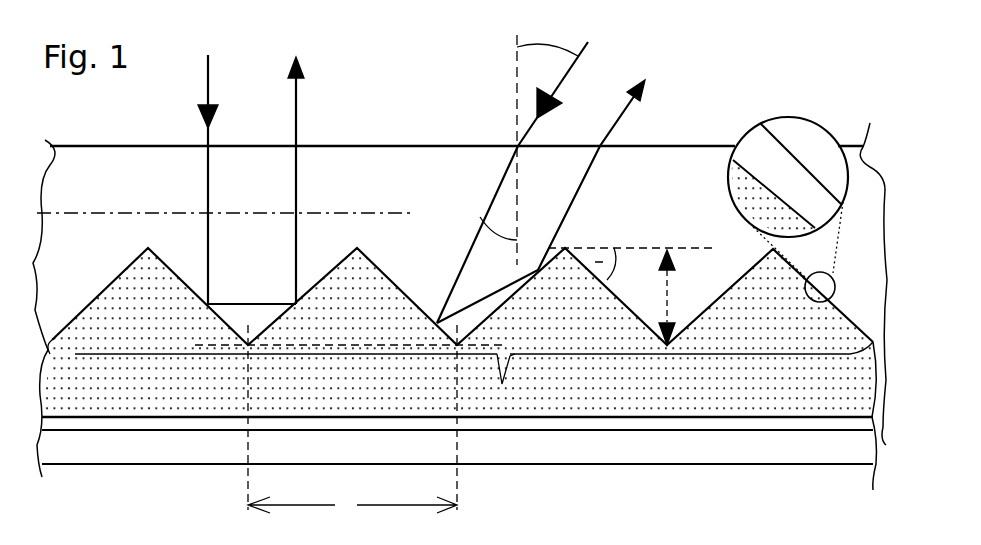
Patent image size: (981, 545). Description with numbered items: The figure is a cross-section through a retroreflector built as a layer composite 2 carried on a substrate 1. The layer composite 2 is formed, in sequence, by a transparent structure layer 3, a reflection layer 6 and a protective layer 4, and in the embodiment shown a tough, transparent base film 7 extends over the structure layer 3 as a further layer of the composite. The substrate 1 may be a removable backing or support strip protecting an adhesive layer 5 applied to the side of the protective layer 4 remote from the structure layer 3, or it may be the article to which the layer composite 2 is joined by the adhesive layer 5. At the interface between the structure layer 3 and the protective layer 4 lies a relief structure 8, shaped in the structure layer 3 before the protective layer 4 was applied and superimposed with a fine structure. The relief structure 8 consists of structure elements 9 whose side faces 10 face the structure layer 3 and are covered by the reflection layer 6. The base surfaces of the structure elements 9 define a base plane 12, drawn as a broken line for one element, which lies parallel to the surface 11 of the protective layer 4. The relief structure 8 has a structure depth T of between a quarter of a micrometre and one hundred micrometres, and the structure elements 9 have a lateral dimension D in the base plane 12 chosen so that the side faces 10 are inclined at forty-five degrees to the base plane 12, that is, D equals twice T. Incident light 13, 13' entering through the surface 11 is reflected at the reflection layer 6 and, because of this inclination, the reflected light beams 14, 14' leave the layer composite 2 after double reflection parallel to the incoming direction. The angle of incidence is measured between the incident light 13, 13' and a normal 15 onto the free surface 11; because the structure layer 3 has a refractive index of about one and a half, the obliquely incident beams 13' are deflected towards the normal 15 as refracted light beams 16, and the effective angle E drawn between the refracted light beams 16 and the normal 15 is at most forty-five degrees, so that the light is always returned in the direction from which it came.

The substrate 1 is at (200, 445).
The layer composite 2 is at (885, 278).
The transparent structure layer 3 is at (727, 182).
The protective layer 4 is at (753, 287).
The adhesive layer 5 is at (317, 422).
The reflection layer 6 is at (771, 172).
The base film 7 is at (87, 185).
The relief structure 8 is at (498, 417).
The structure elements 9 is at (373, 327).
The side faces 10 is at (165, 263).
The surface of the protective layer 11 is at (370, 102).
The base plane 12 is at (415, 343).
The incident light 13 is at (247, 179).
The incident light 13' is at (516, 94).
The reflected light beam 14 is at (317, 180).
The reflected light beam 14' is at (558, 201).
The normal 15 is at (517, 107).
The refracted light beams 16 is at (482, 213).
The lateral dimension D is at (352, 421).
The structure depth T is at (631, 296).
The refraction angle E is at (498, 225).